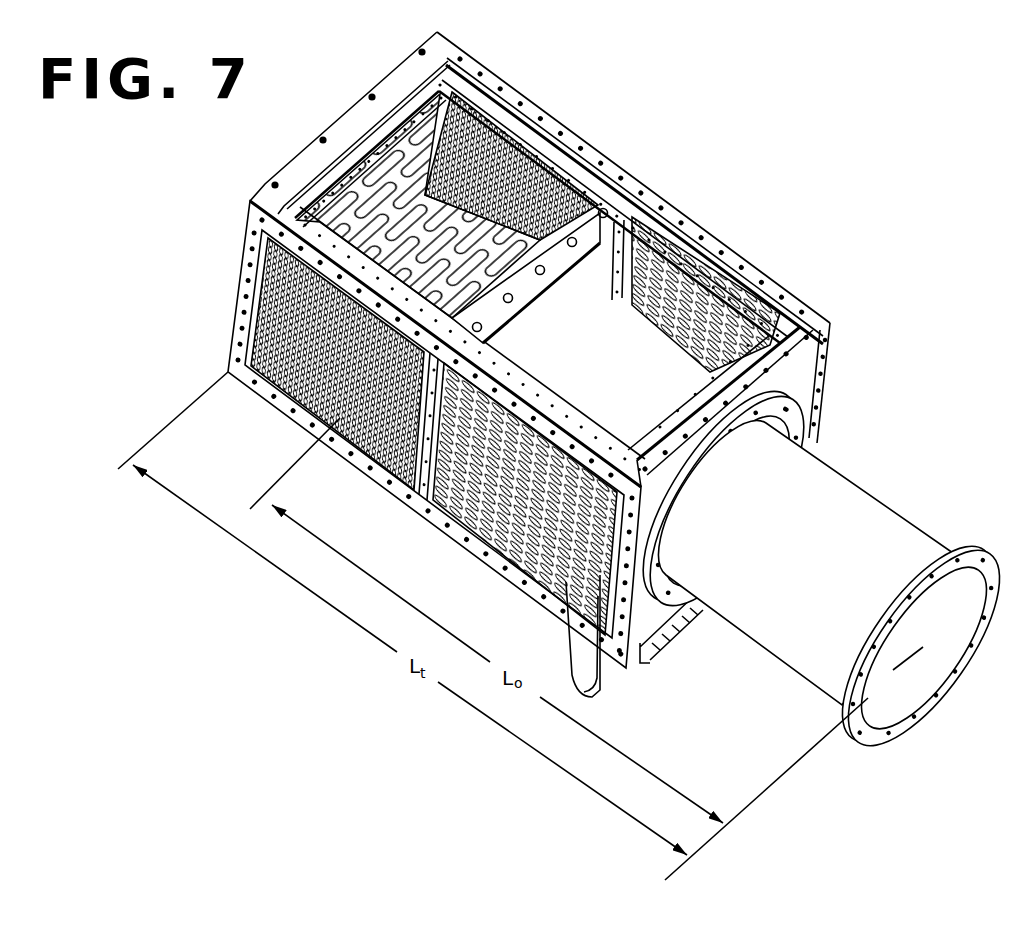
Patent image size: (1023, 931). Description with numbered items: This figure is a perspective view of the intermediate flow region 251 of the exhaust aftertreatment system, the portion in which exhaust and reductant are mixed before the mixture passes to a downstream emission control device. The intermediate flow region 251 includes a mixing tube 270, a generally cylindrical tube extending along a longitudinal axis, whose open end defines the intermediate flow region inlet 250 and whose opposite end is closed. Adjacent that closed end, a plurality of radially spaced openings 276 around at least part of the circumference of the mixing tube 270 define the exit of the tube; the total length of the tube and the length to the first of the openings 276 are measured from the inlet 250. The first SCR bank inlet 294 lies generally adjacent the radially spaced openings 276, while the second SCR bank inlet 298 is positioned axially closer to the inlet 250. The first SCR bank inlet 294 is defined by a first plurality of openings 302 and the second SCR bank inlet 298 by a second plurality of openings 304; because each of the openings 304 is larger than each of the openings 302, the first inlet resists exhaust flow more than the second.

The intermediate flow region inlet 250 is at (951, 714).
The intermediate flow region 251 is at (551, 350).
The mixing tube 270 is at (868, 513).
The radially spaced openings 276 is at (508, 131).
The first SCR bank inlet 294 is at (267, 425).
The second SCR bank inlet 298 is at (486, 578).
The first plurality of openings 302 is at (268, 325).
The second plurality of openings 304 is at (593, 692).